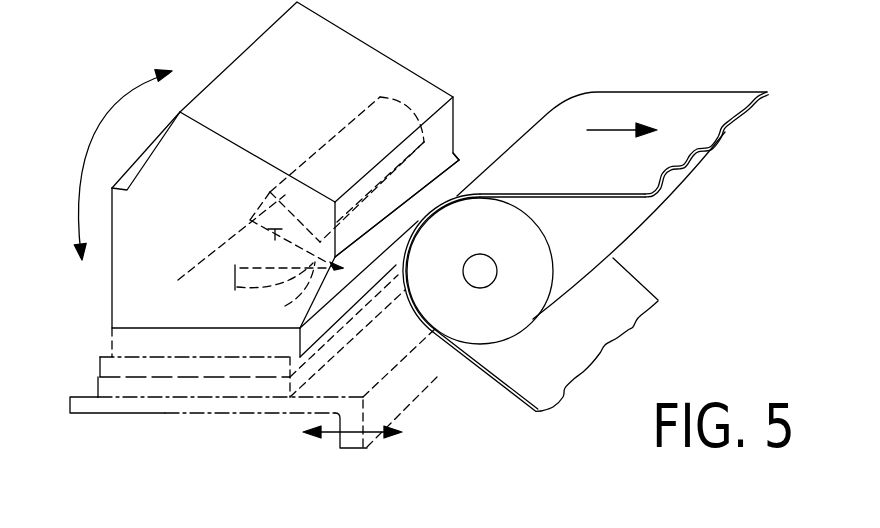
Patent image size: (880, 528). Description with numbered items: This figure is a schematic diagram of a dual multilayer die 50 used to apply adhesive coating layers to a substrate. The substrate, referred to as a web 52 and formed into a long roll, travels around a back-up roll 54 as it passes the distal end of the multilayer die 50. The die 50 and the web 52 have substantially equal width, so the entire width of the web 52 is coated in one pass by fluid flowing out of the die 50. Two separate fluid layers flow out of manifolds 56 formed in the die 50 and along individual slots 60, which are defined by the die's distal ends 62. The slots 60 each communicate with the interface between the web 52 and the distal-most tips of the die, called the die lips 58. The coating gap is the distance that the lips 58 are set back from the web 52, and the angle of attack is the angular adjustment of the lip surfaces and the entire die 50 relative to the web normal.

The multilayer die 50 is at (534, 56).
The web 52 is at (658, 93).
The back-up roll 54 is at (497, 348).
The manifolds 56 is at (232, 278).
The die lips 58 is at (352, 253).
The slots 60 is at (285, 306).
The distal ends 62 is at (433, 150).